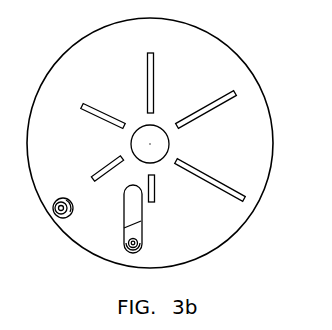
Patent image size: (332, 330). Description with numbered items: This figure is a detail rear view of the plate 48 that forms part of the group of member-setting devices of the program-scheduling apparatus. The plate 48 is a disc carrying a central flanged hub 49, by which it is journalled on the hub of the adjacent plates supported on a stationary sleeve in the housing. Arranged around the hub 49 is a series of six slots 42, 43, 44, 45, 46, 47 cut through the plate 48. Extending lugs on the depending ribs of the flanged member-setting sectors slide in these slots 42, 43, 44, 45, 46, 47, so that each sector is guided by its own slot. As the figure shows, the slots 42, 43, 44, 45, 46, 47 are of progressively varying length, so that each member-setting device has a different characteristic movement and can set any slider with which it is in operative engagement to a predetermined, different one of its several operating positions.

The slot 42 is at (153, 187).
The slot 43 is at (113, 169).
The slot 44 is at (113, 98).
The slot 45 is at (153, 79).
The slot 46 is at (206, 107).
The slot 47 is at (212, 160).
The plate 48 is at (263, 145).
The flanged hub 49 is at (167, 143).